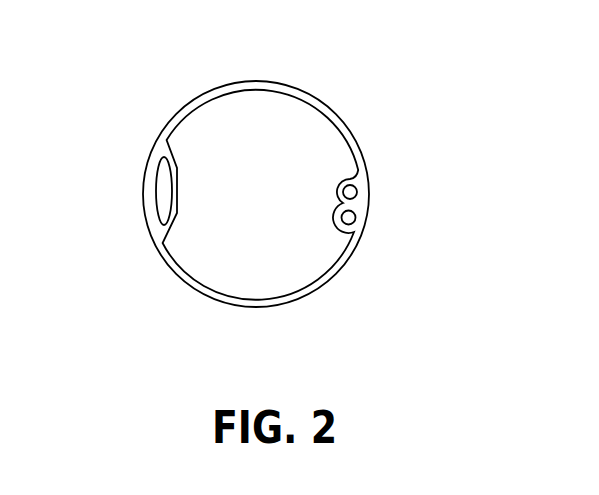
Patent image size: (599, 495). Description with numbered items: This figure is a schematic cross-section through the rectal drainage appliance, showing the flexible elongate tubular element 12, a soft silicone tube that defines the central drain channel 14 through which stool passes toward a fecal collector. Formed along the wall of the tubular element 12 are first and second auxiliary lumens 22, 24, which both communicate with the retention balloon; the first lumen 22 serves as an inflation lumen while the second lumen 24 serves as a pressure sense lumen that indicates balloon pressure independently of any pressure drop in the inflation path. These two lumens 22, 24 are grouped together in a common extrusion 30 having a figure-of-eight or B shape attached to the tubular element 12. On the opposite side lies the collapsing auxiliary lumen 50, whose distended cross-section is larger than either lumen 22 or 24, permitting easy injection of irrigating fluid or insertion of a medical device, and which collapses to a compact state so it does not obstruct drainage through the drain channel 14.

The flexible elongate tubular element 12 is at (283, 85).
The drain channel 14 is at (245, 270).
The first auxiliary lumen 22 is at (356, 192).
The second auxiliary lumen 24 is at (355, 217).
The common extrusion 30 is at (342, 200).
The collapsing auxiliary lumen 50 is at (162, 192).